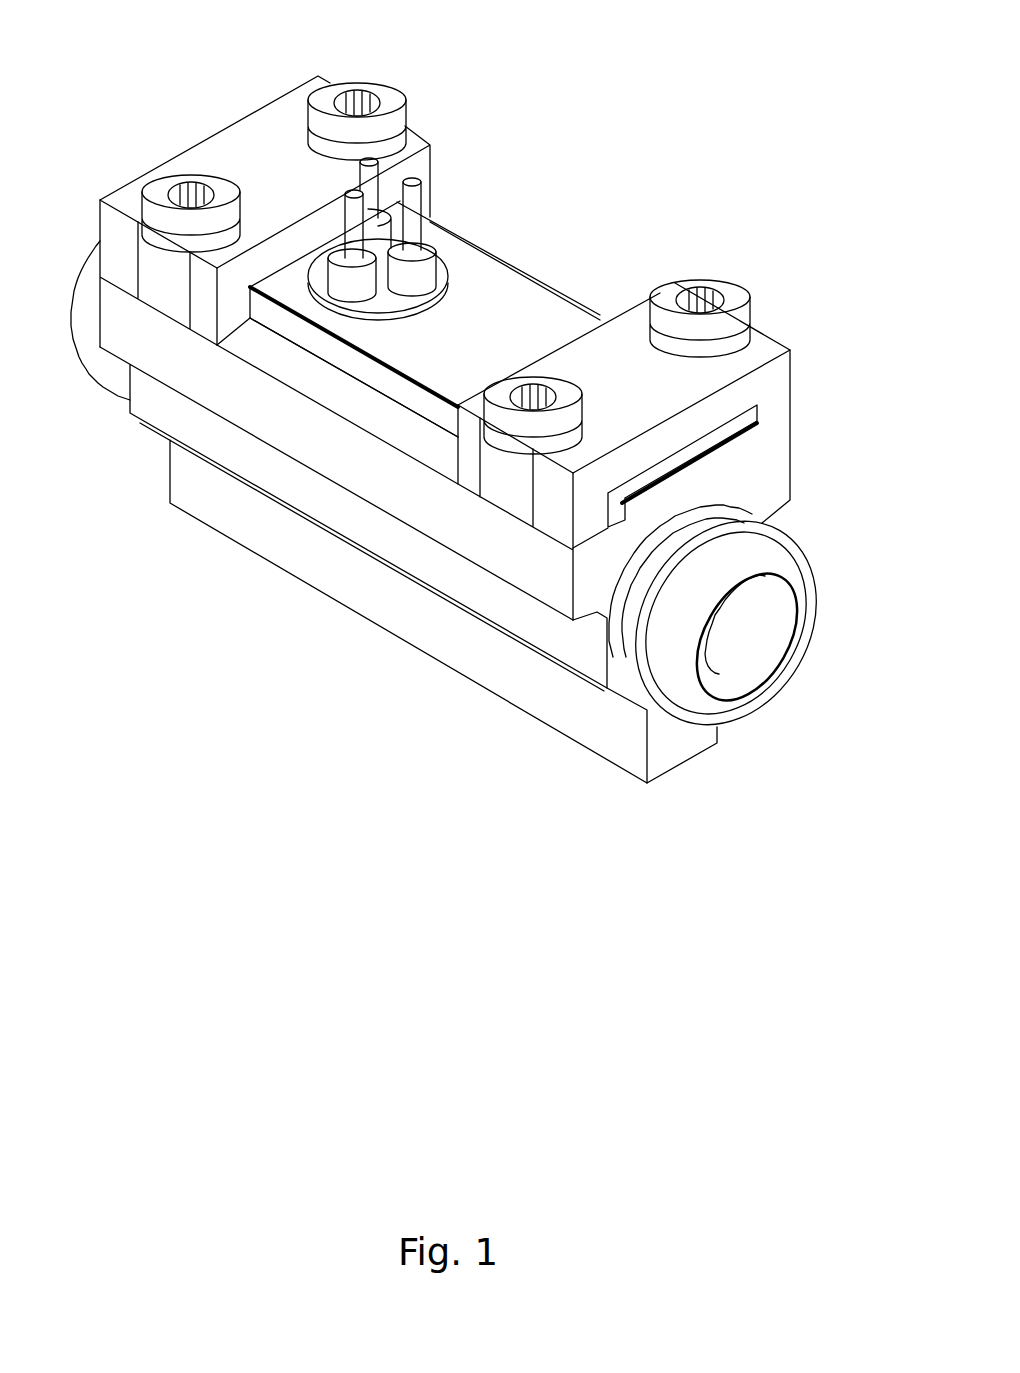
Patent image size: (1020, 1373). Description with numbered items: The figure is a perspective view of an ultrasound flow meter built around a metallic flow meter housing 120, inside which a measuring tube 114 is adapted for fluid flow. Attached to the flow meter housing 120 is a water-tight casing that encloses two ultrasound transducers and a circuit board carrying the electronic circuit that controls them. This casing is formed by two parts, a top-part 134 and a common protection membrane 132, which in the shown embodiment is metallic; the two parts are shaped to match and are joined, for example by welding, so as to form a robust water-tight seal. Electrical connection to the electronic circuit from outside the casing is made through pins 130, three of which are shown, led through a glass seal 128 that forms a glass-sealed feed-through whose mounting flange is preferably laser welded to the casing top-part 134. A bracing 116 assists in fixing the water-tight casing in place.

The measuring tube 114 is at (800, 683).
The bracing 116 is at (630, 340).
The flow meter housing 120 is at (473, 650).
The glass seal 128 is at (320, 282).
The pins 130 is at (409, 227).
The common protection membrane 132 is at (424, 400).
The top-part 134 is at (419, 335).